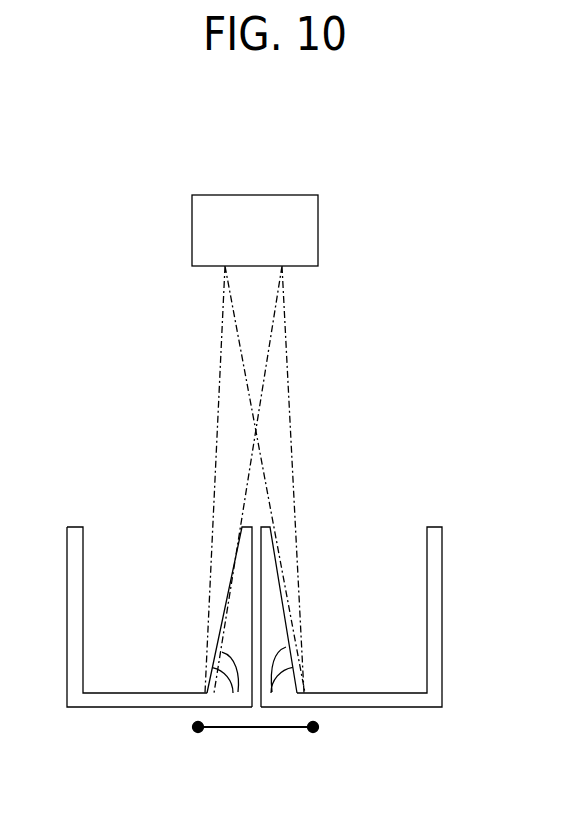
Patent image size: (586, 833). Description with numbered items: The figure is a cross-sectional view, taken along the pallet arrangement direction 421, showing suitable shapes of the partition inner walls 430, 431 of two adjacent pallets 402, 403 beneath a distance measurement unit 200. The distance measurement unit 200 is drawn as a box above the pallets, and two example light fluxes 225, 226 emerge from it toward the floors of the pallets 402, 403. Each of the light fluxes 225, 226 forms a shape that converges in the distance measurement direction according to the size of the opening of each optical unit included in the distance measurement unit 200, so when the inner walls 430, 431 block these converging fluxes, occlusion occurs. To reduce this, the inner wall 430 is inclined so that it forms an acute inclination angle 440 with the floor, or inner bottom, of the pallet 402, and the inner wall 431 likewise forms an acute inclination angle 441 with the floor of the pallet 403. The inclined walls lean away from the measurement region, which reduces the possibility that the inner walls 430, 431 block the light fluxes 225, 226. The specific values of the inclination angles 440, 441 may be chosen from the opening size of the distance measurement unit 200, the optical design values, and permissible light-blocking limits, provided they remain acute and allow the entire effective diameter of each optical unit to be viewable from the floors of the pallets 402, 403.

The distance measurement unit 200 is at (192, 228).
The light flux 225 is at (246, 377).
The light flux 226 is at (285, 328).
The pallet 402 is at (137, 707).
The pallet 403 is at (390, 707).
The inner wall 430 is at (228, 593).
The inner wall 431 is at (279, 581).
The inclination angle 440 is at (222, 652).
The inclination angle 441 is at (286, 647).
The pallet arrangement direction 421 is at (256, 727).